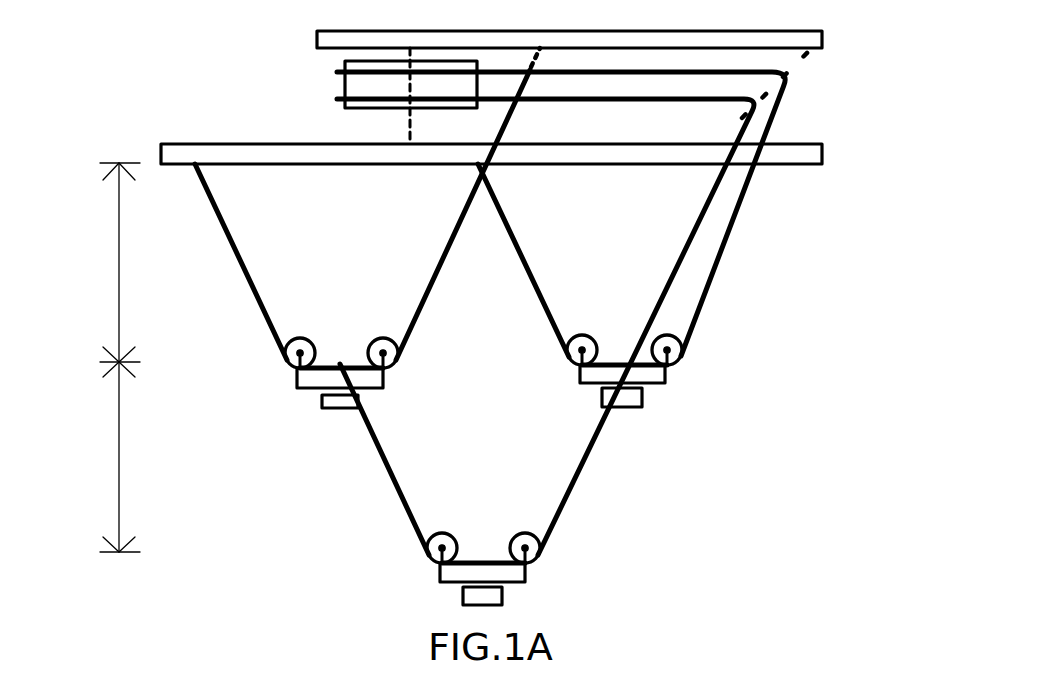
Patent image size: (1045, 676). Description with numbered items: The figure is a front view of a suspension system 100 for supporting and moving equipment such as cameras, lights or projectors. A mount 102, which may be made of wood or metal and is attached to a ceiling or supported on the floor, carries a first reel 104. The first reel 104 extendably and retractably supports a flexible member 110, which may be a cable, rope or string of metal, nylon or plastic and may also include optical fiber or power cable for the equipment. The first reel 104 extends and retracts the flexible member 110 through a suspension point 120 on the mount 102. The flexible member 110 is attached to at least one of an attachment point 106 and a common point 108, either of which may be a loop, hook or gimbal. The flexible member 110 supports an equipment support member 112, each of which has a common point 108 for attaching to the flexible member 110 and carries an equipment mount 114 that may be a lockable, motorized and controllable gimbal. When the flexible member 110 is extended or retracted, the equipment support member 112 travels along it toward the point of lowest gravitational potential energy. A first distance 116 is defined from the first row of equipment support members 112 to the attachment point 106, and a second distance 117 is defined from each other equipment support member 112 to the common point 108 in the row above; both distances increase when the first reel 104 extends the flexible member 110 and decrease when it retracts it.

The suspension system 100 is at (802, 450).
The mount 102 is at (317, 40).
The first reel 104 is at (345, 88).
The attachment point 106 is at (470, 168).
The common point 108 is at (343, 368).
The flexible member 110 is at (731, 240).
The equipment support member 112 is at (692, 374).
The equipment mount 114 is at (642, 399).
The first distance 116 is at (119, 268).
The second distance 117 is at (119, 473).
The suspension point 120 is at (745, 165).